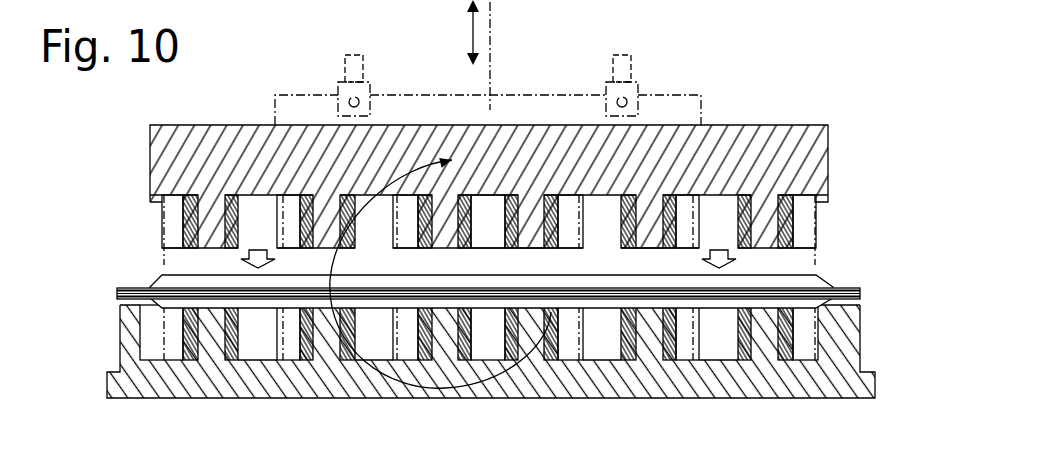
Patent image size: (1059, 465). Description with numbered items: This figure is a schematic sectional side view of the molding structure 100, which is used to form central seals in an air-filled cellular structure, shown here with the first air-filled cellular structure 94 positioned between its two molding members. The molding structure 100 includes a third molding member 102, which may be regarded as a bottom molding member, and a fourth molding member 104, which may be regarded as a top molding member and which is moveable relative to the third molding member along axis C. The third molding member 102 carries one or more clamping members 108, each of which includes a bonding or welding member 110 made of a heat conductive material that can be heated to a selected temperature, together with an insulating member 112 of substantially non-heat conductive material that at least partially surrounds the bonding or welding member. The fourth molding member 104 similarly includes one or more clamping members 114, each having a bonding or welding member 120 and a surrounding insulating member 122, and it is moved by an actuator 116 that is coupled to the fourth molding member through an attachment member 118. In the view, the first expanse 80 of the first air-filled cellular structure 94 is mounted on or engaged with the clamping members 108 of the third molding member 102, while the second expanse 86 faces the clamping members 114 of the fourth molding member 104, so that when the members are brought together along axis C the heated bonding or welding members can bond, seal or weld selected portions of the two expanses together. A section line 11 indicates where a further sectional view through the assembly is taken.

The first expanse 80 is at (148, 299).
The second expanse 86 is at (150, 286).
The first air-filled cellular structure 94 is at (456, 276).
The molding structure 100 is at (80, 178).
The third molding member 102 is at (100, 344).
The fourth molding member 104 is at (133, 162).
The clamping member 108 is at (735, 335).
The bonding or welding member 110 is at (217, 313).
The insulating member 112 is at (427, 315).
The clamping member 114 is at (733, 214).
The actuator 116 is at (639, 59).
The attachment member 118 is at (645, 88).
The bonding or welding member 120 is at (655, 235).
The insulating member 122 is at (506, 220).
The section line for FIG. 11 is at (440, 266).
The axis C is at (495, 38).